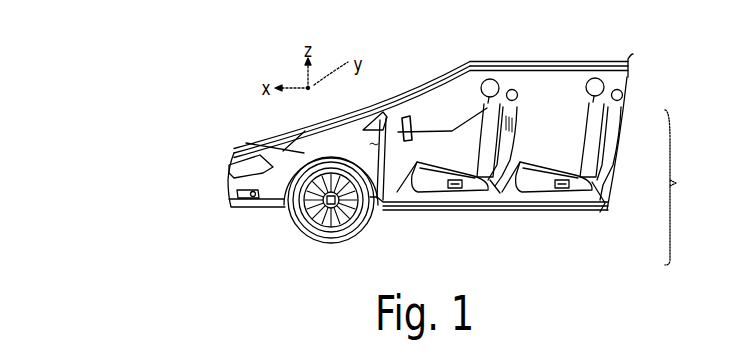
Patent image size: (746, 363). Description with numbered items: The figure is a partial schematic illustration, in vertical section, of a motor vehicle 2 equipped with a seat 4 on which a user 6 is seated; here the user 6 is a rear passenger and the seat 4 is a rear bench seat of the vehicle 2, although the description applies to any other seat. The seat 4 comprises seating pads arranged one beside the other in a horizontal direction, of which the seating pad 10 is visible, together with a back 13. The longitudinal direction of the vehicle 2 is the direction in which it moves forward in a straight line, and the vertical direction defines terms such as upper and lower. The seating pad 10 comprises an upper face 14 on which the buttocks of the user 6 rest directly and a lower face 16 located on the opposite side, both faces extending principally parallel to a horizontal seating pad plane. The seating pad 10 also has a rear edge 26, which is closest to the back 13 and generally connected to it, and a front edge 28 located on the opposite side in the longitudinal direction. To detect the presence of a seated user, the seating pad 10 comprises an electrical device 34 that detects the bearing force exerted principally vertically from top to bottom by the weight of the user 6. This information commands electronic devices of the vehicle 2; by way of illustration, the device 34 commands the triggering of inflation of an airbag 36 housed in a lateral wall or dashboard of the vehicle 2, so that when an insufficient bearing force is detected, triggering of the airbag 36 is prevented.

The motor vehicle 2 is at (252, 136).
The seat 4 is at (680, 187).
The user 6 is at (584, 61).
The seating pad 10 is at (632, 227).
The back 13 is at (606, 132).
The upper face 14 is at (520, 192).
The lower face 16 is at (582, 194).
The rear edge 26 is at (605, 205).
The front edge 28 is at (510, 190).
The electrical device 34 is at (557, 190).
The airbag 36 is at (517, 121).